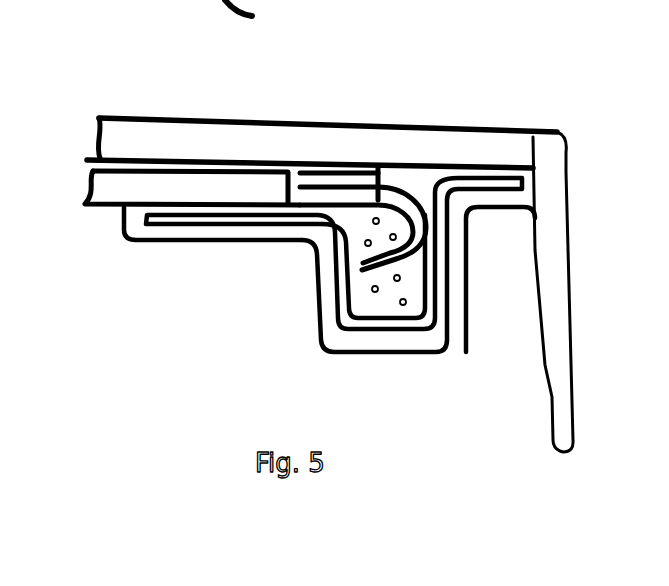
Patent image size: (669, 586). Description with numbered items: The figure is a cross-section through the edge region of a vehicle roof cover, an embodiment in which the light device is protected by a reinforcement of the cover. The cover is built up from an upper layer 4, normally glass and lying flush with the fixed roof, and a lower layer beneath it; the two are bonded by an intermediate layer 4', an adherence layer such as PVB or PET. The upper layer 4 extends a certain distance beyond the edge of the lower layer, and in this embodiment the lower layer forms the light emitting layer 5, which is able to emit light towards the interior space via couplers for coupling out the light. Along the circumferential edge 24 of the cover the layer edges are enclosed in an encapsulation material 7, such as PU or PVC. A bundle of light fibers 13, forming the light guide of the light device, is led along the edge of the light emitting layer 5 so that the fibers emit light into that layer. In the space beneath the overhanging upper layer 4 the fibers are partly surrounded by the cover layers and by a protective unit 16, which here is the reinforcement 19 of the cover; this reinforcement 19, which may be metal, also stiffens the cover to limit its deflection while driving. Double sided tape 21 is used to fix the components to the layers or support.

The upper layer 4 is at (327, 99).
The intermediate layer 4' is at (310, 103).
The light emitting layer 5 is at (152, 180).
The encapsulation material 7 is at (569, 128).
The light fibers 13 is at (402, 195).
The protective unit 16 is at (362, 160).
The reinforcement 19 is at (402, 322).
The double sided tape 21 is at (331, 158).
The circumferential edge 24 is at (559, 200).